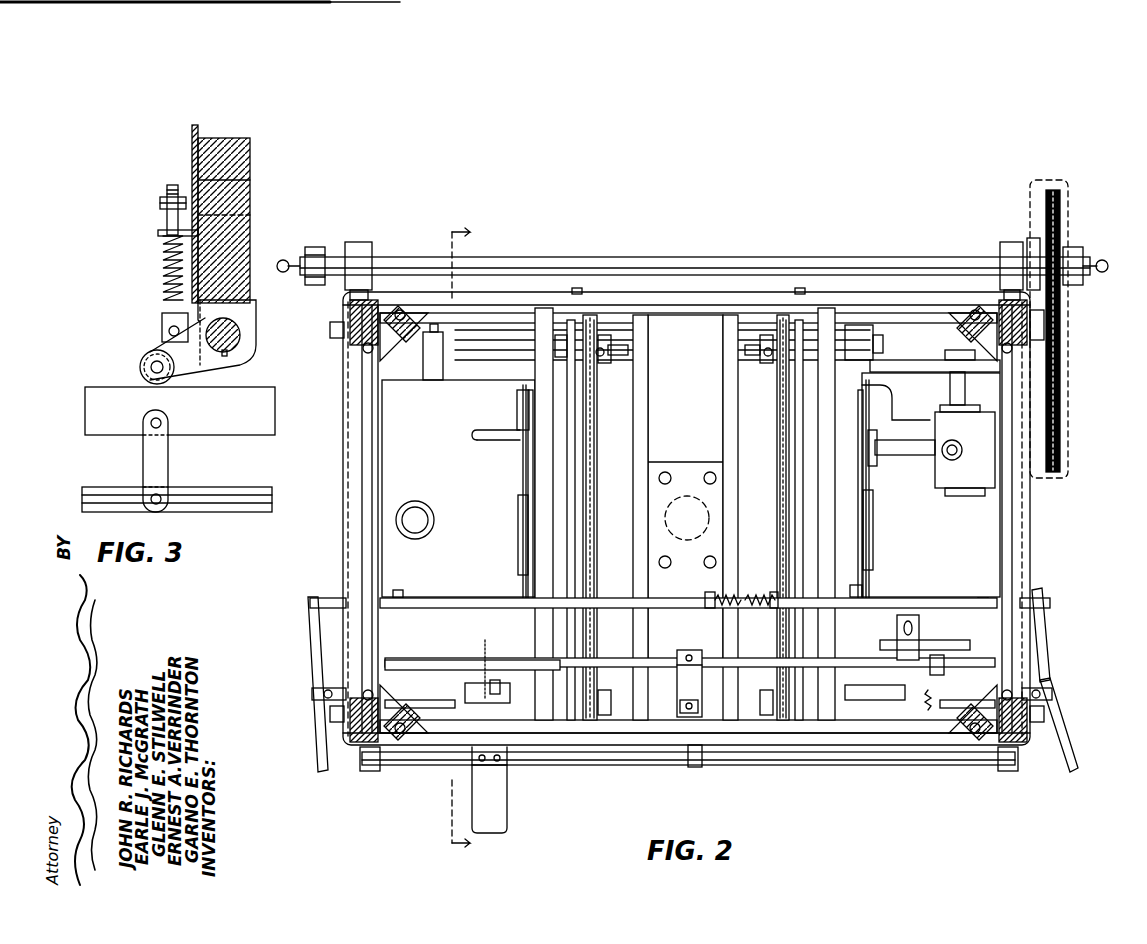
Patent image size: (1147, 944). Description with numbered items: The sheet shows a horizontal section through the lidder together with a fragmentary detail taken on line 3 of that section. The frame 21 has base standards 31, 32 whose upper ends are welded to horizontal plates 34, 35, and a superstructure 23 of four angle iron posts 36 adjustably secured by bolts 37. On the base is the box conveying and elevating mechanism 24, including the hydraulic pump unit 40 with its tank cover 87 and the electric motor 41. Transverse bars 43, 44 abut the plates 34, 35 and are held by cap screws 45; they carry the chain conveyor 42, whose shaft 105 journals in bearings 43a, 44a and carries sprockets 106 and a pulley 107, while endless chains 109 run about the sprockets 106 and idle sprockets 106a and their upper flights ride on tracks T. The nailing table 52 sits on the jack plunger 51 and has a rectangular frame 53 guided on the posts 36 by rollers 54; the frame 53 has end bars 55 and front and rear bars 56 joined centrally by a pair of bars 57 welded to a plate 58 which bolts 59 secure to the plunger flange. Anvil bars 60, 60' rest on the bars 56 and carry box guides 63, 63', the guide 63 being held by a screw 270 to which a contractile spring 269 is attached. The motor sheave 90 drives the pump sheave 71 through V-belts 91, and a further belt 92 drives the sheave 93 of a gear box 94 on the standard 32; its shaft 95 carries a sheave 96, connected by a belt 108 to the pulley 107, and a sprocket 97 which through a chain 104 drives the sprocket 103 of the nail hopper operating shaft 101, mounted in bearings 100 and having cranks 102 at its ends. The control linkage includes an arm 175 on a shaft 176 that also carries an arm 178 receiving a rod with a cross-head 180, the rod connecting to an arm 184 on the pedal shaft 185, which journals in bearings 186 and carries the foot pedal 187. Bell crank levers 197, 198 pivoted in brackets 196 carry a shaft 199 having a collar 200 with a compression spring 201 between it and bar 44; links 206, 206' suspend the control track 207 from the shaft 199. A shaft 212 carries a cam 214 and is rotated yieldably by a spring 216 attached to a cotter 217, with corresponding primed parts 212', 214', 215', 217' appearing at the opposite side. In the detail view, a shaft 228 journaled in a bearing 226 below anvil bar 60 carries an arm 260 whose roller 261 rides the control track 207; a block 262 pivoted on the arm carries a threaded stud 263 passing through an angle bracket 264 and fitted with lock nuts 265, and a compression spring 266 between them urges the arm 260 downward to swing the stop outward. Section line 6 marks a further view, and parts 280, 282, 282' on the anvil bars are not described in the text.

In FIG. 2, the frame 21 is at (331, 434).
In FIG. 2, the superstructure 23 is at (1073, 772).
In FIG. 2, the box conveying and elevating mechanism 24 is at (555, 768).
In FIG. 2, the base standard 31 is at (346, 466).
In FIG. 2, the base standard 32 is at (1030, 520).
In FIG. 2, the horizontal plate 34 is at (608, 310).
In FIG. 2, the horizontal plate 35 is at (640, 746).
In FIG. 2, the angle iron post 36 is at (352, 308).
In FIG. 2, the bolt 37 is at (346, 328).
In FIG. 2, the hydraulic pump unit 40 is at (388, 578).
In FIG. 2, the electric motor 41 is at (930, 543).
In FIG. 2, the chain conveyor 42 is at (770, 330).
In FIG. 2, the transverse bar 43 is at (542, 306).
In FIG. 2, the bearing 43a is at (605, 360).
In FIG. 2, the transverse bar 44 is at (805, 310).
In FIG. 2, the bearing 44a is at (766, 360).
In FIG. 2, the cap screw 45 is at (578, 288).
In FIG. 2, the plunger 51 is at (665, 508).
In FIG. 2, the nailing table 52 is at (745, 740).
In FIG. 2, the rectangular frame 53 is at (688, 322).
In FIG. 2, the roller 54 is at (372, 338).
In FIG. 2, the end bar 55 is at (362, 530).
In FIG. 2, the front and rear bar 56 is at (910, 314).
In FIG. 2, the bar 57 is at (650, 418).
In FIG. 2, the plate 58 is at (698, 468).
In FIG. 2, the bolt 59 is at (664, 472).
In FIG. 2, the anvil bar 60 is at (672, 490).
In FIG. 3, the anvil bar 60 is at (240, 220).
In FIG. 2, the anvil bar 60' is at (891, 518).
In FIG. 2, the box guide 63 is at (665, 495).
In FIG. 3, the box guide 63 is at (174, 214).
In FIG. 2, the box guide 63' is at (884, 570).
In FIG. 2, the triple sheave 71 is at (500, 358).
In FIG. 2, the cover 87 is at (464, 556).
In FIG. 2, the quadruple sheave 90 is at (875, 330).
In FIG. 2, the V-belt 91 is at (470, 338).
In FIG. 2, the belt 92 is at (952, 372).
In FIG. 2, the single sheave 93 is at (945, 356).
In FIG. 2, the gear box 94 is at (965, 486).
In FIG. 2, the shaft 95 is at (908, 456).
In FIG. 2, the sheave 96 is at (874, 468).
In FIG. 2, the sprocket 97 is at (1060, 472).
In FIG. 2, the bearing 100 is at (358, 248).
In FIG. 2, the nail hopper operating shaft 101 is at (925, 262).
In FIG. 2, the crank 102 is at (315, 247).
In FIG. 2, the sprocket 103 is at (1033, 240).
In FIG. 2, the chain 104 is at (1046, 326).
In FIG. 2, the shaft 105 is at (648, 360).
In FIG. 2, the sprocket 106 is at (760, 358).
In FIG. 2, the idle sprocket 106a is at (600, 334).
In FIG. 2, the pulley 107 is at (880, 345).
In FIG. 2, the belt 108 is at (875, 412).
In FIG. 2, the endless chain 109 is at (598, 490).
In FIG. 2, the track T is at (598, 438).
In FIG. 2, the arm 175 is at (920, 632).
In FIG. 2, the shaft 176 is at (978, 655).
In FIG. 2, the arm 178 is at (680, 686).
In FIG. 2, the cross-head 180 is at (700, 706).
In FIG. 2, the arm 184 is at (698, 768).
In FIG. 2, the pedal shaft 185 is at (845, 740).
In FIG. 2, the bearing 186 is at (372, 772).
In FIG. 2, the foot pedal 187 is at (508, 820).
In FIG. 2, the bracket 196 is at (316, 690).
In FIG. 2, the bell crank lever 197 is at (318, 765).
In FIG. 2, the bell crank lever 198 is at (1046, 636).
In FIG. 2, the shaft 199 is at (420, 608).
In FIG. 3, the shaft 199 is at (228, 486).
In FIG. 2, the collar 200 is at (710, 608).
In FIG. 2, the coiled compression spring 201 is at (750, 604).
In FIG. 2, the link 206 is at (690, 553).
In FIG. 3, the link 206 is at (134, 461).
In FIG. 2, the link 206' is at (965, 574).
In FIG. 3, the control track 207 is at (118, 436).
In FIG. 2, the shaft 212 is at (420, 689).
In FIG. 2, the bar 212' is at (967, 745).
In FIG. 2, the cam 214 is at (472, 653).
In FIG. 2, the bar 214' is at (869, 735).
In FIG. 2, the spring 215' is at (943, 690).
In FIG. 2, the spring 216 is at (450, 706).
In FIG. 2, the cotter 217 is at (422, 781).
In FIG. 2, the bar 217' is at (940, 780).
In FIG. 3, the bearing 226 is at (252, 365).
In FIG. 3, the shaft 228 is at (250, 322).
In FIG. 3, the arm 260 is at (160, 350).
In FIG. 3, the roller 261 is at (140, 362).
In FIG. 3, the block 262 is at (165, 322).
In FIG. 3, the threaded stud 263 is at (167, 220).
In FIG. 3, the angle bracket 264 is at (160, 236).
In FIG. 3, the lock nut 265 is at (160, 202).
In FIG. 3, the compression spring 266 is at (163, 270).
In FIG. 2, the contractile spring 269 is at (495, 680).
In FIG. 2, the screw 270 is at (866, 592).
In FIG. 2, the fitting 280 is at (515, 408).
In FIG. 2, the cylinder 282 is at (494, 535).
In FIG. 2, the cylinder 282' is at (888, 530).
In FIG. 2, the section line 3— 3 is at (504, 632).
In FIG. 2, the section line 6— 6 is at (450, 537).